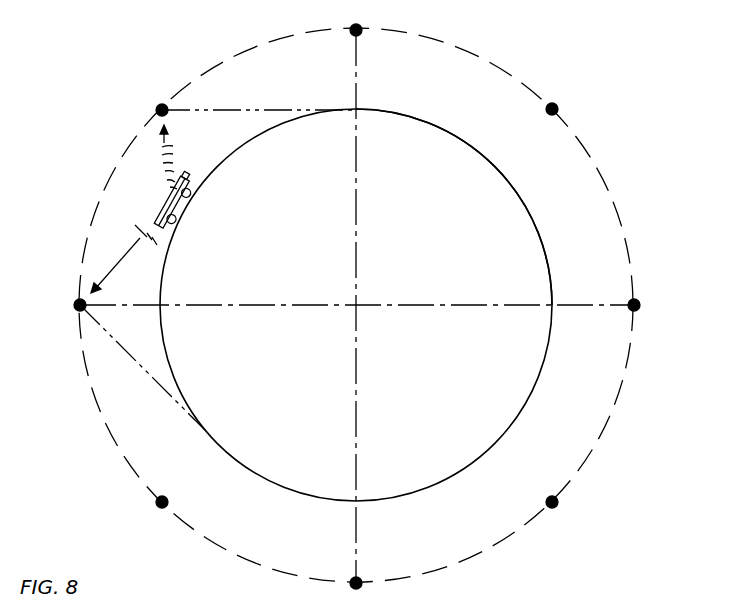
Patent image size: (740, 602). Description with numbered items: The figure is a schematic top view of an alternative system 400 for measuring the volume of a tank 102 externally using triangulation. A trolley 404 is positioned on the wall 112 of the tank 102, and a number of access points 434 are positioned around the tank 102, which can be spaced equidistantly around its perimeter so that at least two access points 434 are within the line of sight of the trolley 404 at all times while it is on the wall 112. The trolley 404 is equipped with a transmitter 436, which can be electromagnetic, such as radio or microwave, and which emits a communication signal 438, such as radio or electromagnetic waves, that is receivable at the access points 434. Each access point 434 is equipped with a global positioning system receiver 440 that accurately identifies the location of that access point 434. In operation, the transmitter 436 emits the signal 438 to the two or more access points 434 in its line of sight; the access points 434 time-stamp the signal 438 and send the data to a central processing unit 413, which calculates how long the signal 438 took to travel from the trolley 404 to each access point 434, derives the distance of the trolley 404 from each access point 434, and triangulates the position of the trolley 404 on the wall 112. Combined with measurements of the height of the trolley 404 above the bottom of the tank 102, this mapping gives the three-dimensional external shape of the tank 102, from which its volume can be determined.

The system 400 is at (140, 52).
The tank 102 is at (517, 260).
The wall 112 is at (523, 198).
The trolley 404 is at (185, 215).
The central processing unit 413 is at (180, 176).
The access points 434 is at (636, 313).
The transmitter 436 is at (170, 205).
The communication signal 438 is at (135, 225).
The global positioning system (GPS) receiver 440 is at (160, 110).